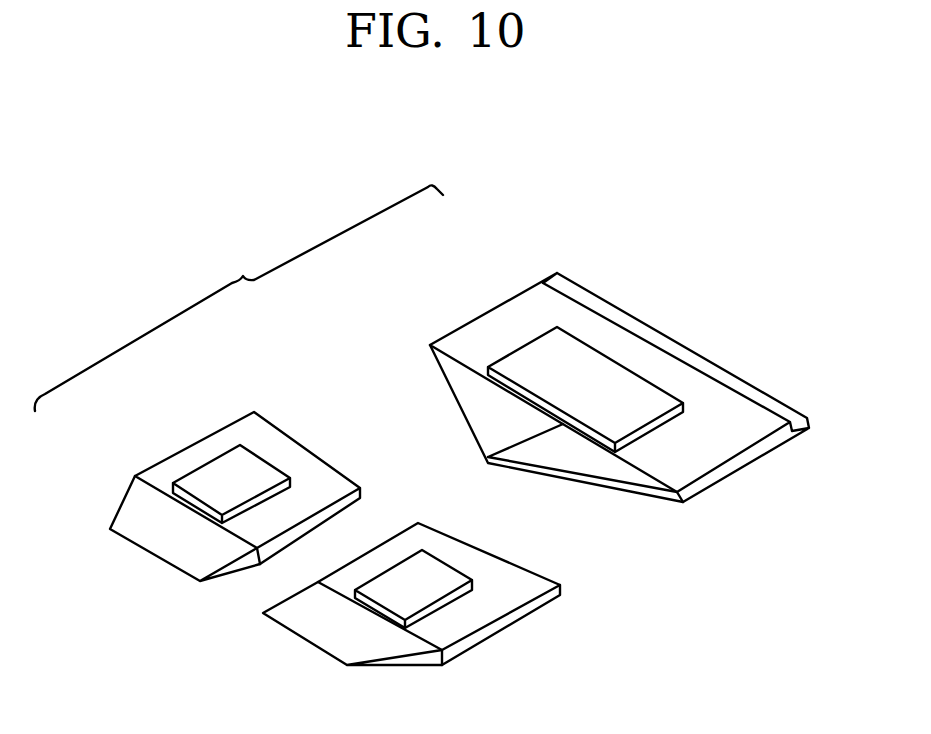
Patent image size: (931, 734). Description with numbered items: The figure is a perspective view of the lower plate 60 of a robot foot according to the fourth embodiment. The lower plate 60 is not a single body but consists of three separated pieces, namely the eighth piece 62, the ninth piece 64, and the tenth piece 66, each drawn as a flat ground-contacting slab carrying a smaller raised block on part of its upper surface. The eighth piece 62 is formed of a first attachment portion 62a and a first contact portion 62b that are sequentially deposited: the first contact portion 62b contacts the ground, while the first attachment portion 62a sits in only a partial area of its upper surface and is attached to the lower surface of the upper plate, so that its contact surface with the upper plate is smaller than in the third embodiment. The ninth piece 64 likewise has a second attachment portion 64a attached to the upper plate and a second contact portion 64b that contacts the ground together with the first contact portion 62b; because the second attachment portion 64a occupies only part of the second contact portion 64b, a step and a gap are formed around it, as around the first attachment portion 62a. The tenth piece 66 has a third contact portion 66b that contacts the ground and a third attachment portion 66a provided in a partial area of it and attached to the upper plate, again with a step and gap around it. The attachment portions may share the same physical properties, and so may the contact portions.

The lower plate 60 is at (239, 298).
The eighth piece 62 is at (233, 480).
The first attachment portion 62a is at (198, 482).
The first contact portion 62b is at (231, 420).
The ninth piece 64 is at (436, 588).
The second attachment portion 64a is at (408, 600).
The second contact portion 64b is at (522, 613).
The tenth piece 66 is at (640, 376).
The third attachment portion 66a is at (637, 393).
The third contact portion 66b is at (758, 458).